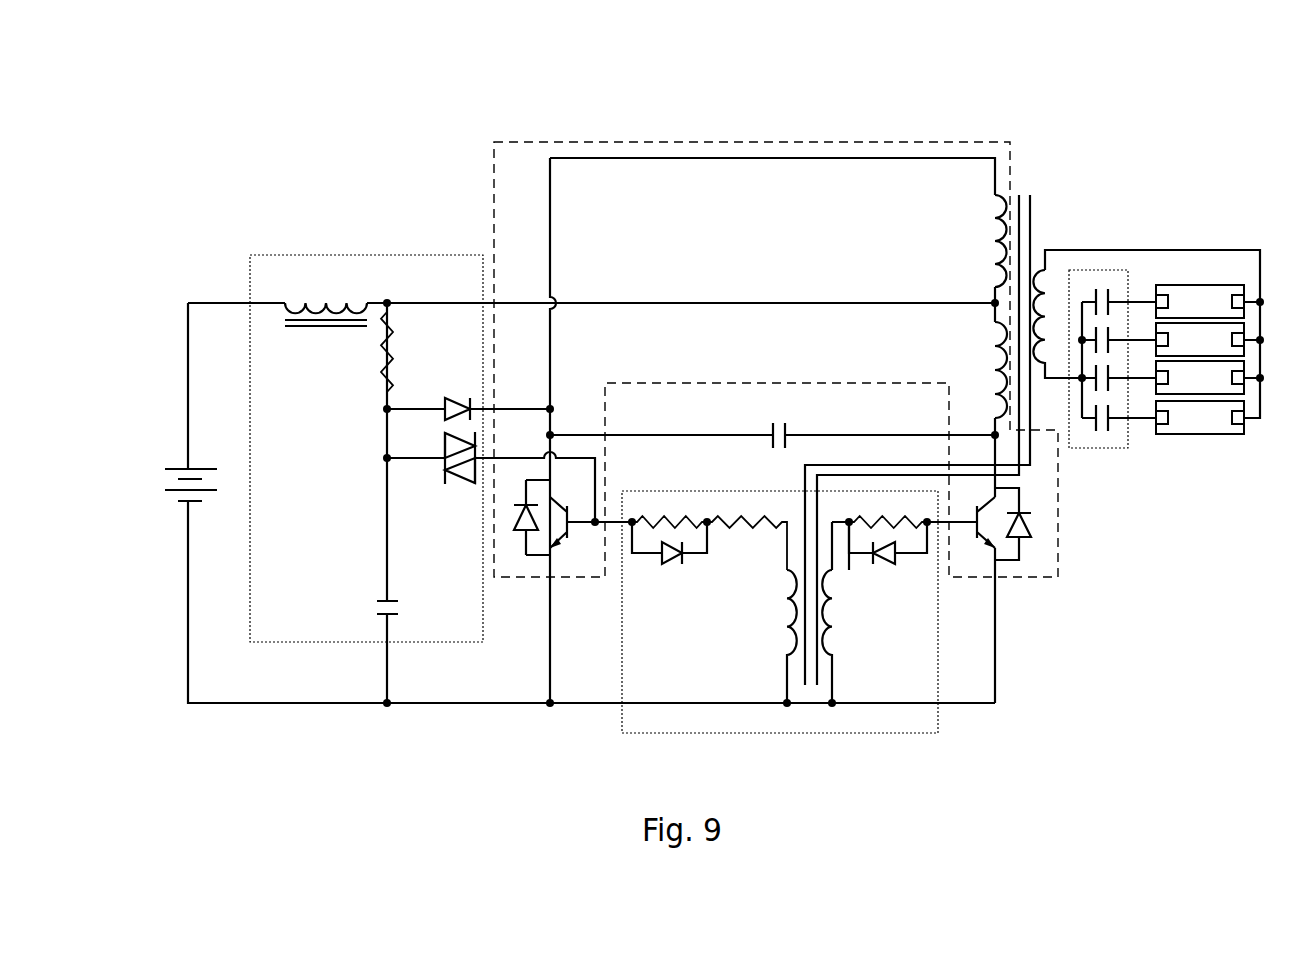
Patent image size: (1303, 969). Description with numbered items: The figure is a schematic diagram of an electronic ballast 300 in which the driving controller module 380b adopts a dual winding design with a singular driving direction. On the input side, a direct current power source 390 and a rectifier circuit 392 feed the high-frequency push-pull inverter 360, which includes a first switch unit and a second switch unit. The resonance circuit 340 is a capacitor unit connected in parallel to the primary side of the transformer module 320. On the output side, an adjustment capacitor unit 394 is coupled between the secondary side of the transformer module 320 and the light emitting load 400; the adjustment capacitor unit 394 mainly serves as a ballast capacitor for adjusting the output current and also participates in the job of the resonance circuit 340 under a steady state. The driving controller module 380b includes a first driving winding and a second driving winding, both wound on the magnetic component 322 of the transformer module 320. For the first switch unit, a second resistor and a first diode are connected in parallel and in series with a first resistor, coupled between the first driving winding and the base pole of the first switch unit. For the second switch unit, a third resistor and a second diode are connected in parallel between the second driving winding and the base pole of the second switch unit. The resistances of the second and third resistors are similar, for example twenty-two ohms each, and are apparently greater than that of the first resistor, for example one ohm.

The electronic ballast 300 is at (382, 106).
The direct current (DC) power source 390 is at (182, 469).
The rectifier circuit 392 is at (378, 255).
The high-frequency push-pull inverter 360 is at (672, 140).
The resonance circuit 340 is at (790, 433).
The driving controller module 380b is at (888, 737).
The magnetic component 322 is at (1030, 212).
The transformer module 320 is at (1055, 228).
The adjustment capacitor unit 394 is at (1112, 450).
The light emitting load 400 is at (1202, 458).